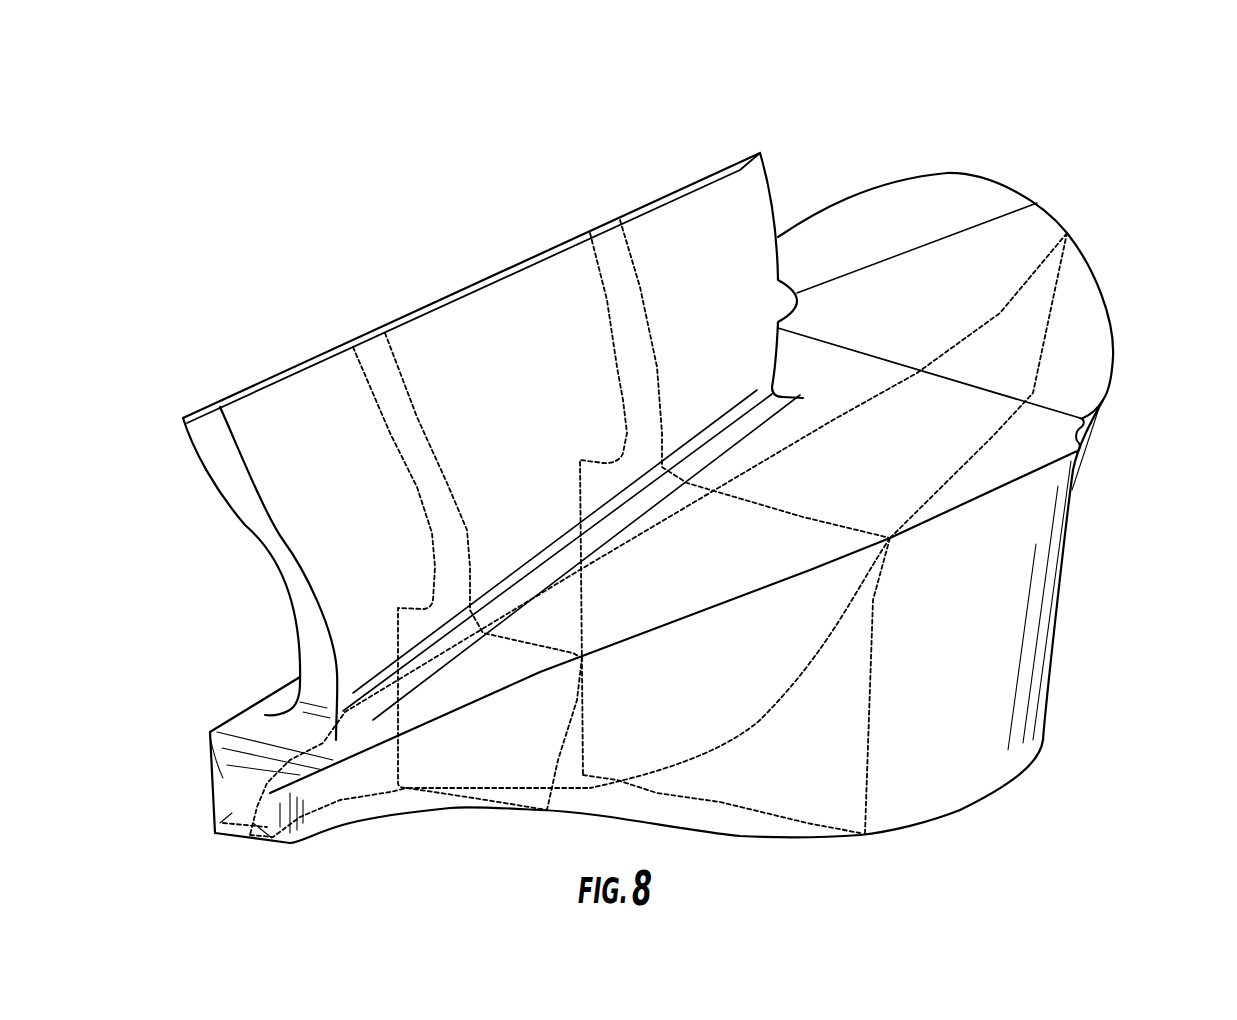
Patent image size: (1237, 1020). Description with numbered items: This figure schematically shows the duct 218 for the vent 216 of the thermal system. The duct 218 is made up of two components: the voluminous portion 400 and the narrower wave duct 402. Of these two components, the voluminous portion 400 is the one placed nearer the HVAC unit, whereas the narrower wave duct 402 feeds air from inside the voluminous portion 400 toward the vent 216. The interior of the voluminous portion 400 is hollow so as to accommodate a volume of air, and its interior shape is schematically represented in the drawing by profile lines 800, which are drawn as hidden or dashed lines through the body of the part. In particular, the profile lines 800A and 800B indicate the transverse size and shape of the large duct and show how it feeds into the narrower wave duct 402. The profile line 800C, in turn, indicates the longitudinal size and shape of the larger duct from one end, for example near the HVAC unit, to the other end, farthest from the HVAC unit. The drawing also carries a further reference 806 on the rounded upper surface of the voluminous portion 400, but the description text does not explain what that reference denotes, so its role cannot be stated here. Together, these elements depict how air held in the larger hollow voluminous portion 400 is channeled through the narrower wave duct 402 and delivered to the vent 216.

The vent 216 is at (673, 187).
The duct 218 is at (1112, 152).
The voluminous portion 400 is at (1113, 357).
The narrower wave duct 402 is at (268, 556).
The profile lines 800 is at (1125, 701).
The platform top surface 806 is at (980, 173).
The profile line 800A is at (830, 522).
The profile line 800B is at (560, 763).
The profile line 800C is at (989, 436).